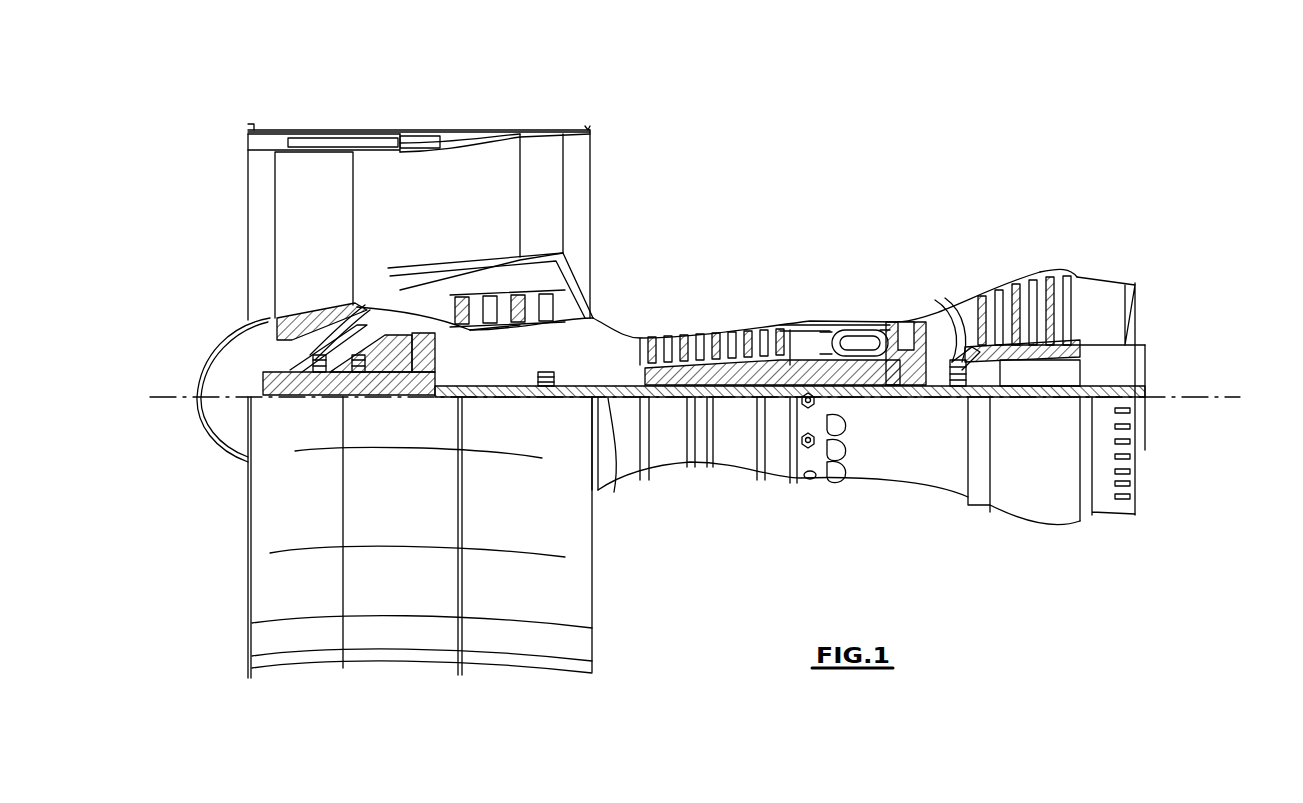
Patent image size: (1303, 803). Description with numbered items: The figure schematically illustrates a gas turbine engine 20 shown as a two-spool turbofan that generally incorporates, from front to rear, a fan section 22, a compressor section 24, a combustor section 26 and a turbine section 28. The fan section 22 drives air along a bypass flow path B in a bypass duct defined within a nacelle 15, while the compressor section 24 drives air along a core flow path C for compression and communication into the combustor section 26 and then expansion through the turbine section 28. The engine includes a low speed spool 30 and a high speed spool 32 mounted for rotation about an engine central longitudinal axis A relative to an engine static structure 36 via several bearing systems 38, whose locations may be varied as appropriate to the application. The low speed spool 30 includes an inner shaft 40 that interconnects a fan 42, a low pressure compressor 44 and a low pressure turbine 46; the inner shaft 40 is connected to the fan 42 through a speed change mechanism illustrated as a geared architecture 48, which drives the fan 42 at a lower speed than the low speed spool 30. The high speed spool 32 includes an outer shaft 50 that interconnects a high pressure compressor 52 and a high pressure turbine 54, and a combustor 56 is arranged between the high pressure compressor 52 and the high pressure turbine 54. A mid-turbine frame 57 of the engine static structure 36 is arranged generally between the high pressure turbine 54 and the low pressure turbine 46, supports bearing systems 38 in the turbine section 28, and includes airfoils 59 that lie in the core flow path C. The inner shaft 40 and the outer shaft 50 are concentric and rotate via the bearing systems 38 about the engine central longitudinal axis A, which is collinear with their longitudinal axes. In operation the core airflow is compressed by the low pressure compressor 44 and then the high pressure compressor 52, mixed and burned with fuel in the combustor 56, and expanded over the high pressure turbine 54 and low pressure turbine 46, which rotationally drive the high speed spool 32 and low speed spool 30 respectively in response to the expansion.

The nacelle 15 is at (418, 132).
The gas turbine engine 20 is at (853, 176).
The fan section 22 is at (353, 118).
The compressor section 24 is at (638, 312).
The combustor section 26 is at (848, 296).
The turbine section 28 is at (985, 266).
The low speed spool 30 is at (738, 402).
The high speed spool 32 is at (780, 330).
The engine static structure 36 is at (775, 484).
The bearing systems 38 is at (546, 396).
The inner shaft 40 is at (612, 480).
The fan 42 is at (299, 249).
The low pressure compressor 44 is at (530, 302).
The low pressure turbine 46 is at (1028, 292).
The geared architecture 48 is at (428, 397).
The outer shaft 50 is at (855, 398).
The high pressure compressor 52 is at (714, 362).
The high pressure turbine 54 is at (912, 325).
The combustor 56 is at (850, 340).
The mid-turbine frame 57 is at (950, 302).
The airfoils 59 is at (980, 373).
The engine central longitudinal axis A is at (1240, 395).
The bypass flow path B is at (385, 200).
The core flow path C is at (425, 300).